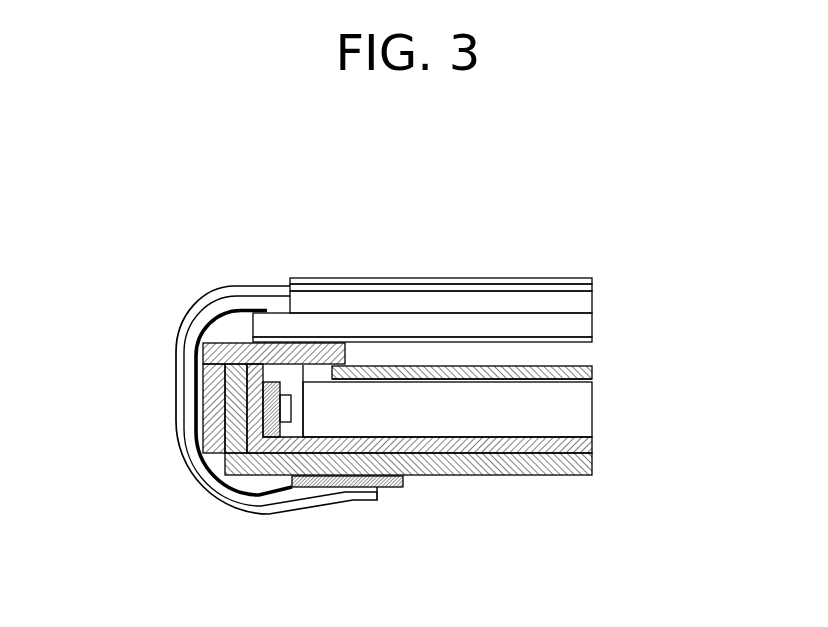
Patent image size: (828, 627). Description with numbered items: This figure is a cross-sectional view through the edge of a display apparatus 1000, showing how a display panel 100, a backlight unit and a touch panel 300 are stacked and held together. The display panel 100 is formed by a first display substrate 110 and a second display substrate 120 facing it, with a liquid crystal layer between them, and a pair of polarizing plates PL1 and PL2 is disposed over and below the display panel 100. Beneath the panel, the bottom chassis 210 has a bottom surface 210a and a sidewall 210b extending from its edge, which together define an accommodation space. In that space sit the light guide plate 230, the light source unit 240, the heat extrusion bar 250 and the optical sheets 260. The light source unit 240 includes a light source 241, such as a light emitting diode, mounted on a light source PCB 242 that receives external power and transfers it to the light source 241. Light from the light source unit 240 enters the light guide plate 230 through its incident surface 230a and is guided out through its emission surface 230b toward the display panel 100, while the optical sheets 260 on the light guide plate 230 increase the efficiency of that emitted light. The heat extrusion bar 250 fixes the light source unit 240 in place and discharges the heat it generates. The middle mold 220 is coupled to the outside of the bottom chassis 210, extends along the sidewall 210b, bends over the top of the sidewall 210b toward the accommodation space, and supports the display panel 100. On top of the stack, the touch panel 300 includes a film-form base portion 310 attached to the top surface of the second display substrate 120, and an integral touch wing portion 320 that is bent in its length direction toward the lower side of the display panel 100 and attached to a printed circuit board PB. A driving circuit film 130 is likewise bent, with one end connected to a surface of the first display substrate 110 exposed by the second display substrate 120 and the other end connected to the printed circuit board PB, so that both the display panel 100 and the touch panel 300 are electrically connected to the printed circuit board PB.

The display apparatus 1000 is at (559, 186).
The display panel 100 is at (488, 313).
The polarizing plate PL1 is at (596, 279).
The base portion 310 is at (596, 287).
The second display substrate 120 is at (588, 303).
The first display substrate 110 is at (588, 330).
The polarizing plate PL2 is at (596, 341).
The driving circuit film 130 is at (201, 356).
The middle mold 220 is at (211, 399).
The bottom chassis 210 is at (311, 424).
The bottom surface 210a is at (259, 465).
The sidewall 210b is at (236, 430).
The heat extrusion bar 250 is at (596, 446).
The light guide plate 230 is at (580, 416).
The incident surface 230a is at (302, 392).
The emission surface 230b is at (408, 378).
The optical sheets 260 is at (596, 373).
The light source unit 240 is at (306, 491).
The light source 241 is at (286, 411).
The light source PCB 242 is at (273, 426).
The printed circuit board PB is at (390, 488).
The touch wing portion 320 is at (192, 330).
The touch panel 300 is at (212, 288).